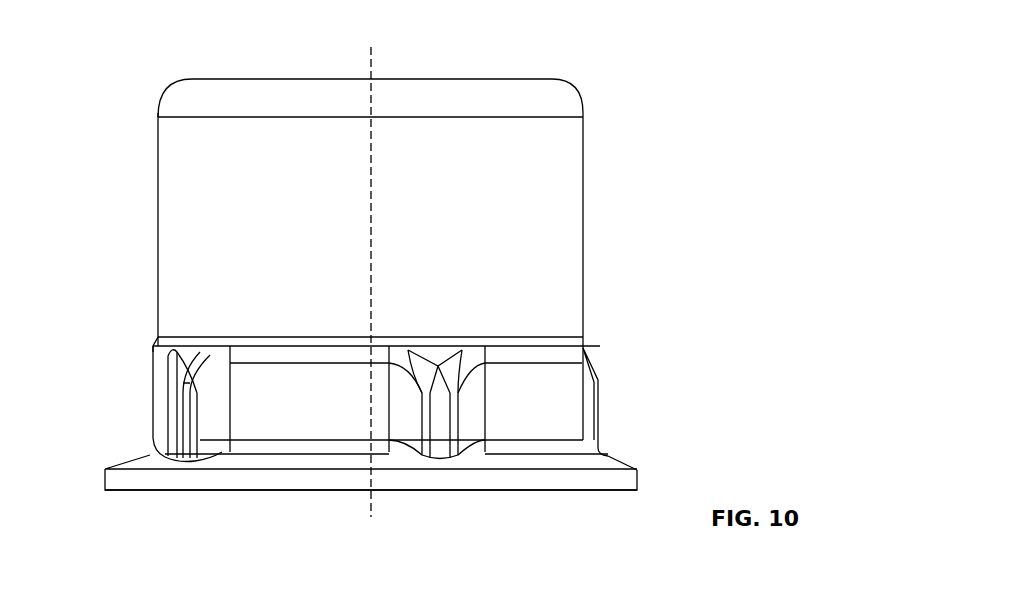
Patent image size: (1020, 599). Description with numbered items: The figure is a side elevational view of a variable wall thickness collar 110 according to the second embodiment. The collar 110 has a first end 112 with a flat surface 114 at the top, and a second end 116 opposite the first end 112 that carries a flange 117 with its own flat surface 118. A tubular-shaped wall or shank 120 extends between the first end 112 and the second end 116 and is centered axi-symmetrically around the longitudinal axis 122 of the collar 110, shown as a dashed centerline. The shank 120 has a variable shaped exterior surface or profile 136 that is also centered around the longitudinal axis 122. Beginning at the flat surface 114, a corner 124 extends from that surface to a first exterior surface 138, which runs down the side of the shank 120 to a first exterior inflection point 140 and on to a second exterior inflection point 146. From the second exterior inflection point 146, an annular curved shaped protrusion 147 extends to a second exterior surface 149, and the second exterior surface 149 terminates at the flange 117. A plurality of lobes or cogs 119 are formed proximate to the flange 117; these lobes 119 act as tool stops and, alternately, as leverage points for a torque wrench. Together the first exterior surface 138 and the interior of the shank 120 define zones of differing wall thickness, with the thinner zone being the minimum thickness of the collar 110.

The variable wall thickness collar 110 is at (117, 59).
The first end 112 is at (429, 69).
The flat surface 114 is at (527, 77).
The second end 116 is at (271, 496).
The flange 117 is at (633, 465).
The flat surface 118 is at (552, 492).
The lobes or cogs 119 is at (172, 385).
The shank 120 is at (608, 211).
The longitudinal axis 122 is at (371, 60).
The corner 124 is at (578, 95).
The exterior surface 136 is at (630, 247).
The first exterior surface 138 is at (585, 178).
The first exterior inflection point 140 is at (585, 340).
The second exterior inflection point 146 is at (585, 350).
The annular curved shaped protrusion 147 is at (163, 344).
The second exterior surface 149 is at (160, 430).